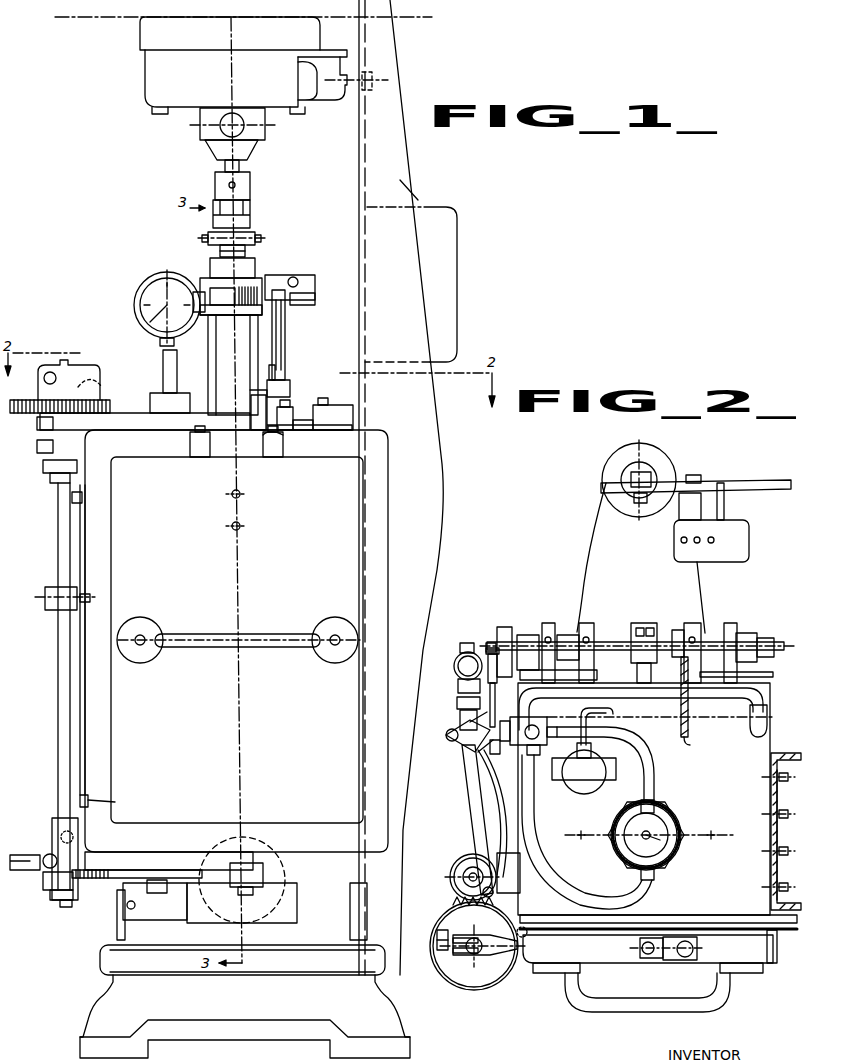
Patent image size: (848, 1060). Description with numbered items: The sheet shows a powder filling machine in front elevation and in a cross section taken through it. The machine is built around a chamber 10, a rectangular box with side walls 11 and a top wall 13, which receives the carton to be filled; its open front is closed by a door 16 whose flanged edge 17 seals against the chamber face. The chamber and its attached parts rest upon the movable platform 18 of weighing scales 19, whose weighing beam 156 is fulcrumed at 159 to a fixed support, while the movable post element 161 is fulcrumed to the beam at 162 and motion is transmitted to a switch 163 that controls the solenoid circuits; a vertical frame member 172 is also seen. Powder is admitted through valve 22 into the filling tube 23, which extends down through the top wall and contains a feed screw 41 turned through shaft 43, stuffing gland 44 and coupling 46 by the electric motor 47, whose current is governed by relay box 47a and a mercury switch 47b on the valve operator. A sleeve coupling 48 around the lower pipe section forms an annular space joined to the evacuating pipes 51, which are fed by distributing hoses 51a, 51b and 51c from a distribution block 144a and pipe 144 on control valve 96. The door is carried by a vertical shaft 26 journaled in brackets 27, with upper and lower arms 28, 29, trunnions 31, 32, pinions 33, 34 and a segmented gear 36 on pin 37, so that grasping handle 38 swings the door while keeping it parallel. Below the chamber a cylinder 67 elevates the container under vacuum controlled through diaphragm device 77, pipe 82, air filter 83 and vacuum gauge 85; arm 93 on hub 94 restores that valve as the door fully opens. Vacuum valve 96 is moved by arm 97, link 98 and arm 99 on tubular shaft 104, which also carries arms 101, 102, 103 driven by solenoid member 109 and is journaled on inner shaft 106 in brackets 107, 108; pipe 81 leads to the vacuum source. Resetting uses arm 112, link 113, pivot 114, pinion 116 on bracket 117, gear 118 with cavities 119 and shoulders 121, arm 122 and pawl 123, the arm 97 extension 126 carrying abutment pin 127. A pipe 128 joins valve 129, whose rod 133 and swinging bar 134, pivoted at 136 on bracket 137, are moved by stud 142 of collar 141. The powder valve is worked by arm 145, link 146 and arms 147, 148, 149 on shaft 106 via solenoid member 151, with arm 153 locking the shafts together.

In FIG. 2, the chamber 10 is at (775, 755).
In FIG. 1, the side walls 11 is at (117, 925).
In FIG. 2, the top wall 13 is at (778, 846).
In FIG. 1, the door 16 is at (352, 538).
In FIG. 2, the door 16 is at (767, 958).
In FIG. 1, the flanged edge 17 is at (378, 553).
In FIG. 2, the flanged edge 17 is at (781, 933).
In FIG. 1, the movable platform 18 is at (110, 955).
In FIG. 1, the weighing scales 19 is at (95, 1000).
In FIG. 2, the weighing scales 19 is at (596, 508).
In FIG. 1, the valve 22 is at (256, 272).
In FIG. 1, the powder filling tube 23 is at (208, 345).
In FIG. 2, the powder filling tube 23 is at (665, 815).
In FIG. 1, the vertical shaft 26 is at (58, 633).
In FIG. 2, the vertical shaft 26 is at (455, 962).
In FIG. 1, the brackets 27 is at (43, 465).
In FIG. 1, the upper arm 28 is at (122, 413).
In FIG. 2, the upper arm 28 is at (587, 953).
In FIG. 1, the lower arm 29 is at (132, 852).
In FIG. 1, the trunnion 31 is at (228, 432).
In FIG. 2, the trunnion 31 is at (653, 958).
In FIG. 1, the trunnion 32 is at (238, 860).
In FIG. 1, the pinion 33 is at (55, 885).
In FIG. 1, the pinion 34 is at (232, 880).
In FIG. 1, the segmented gear 36 is at (176, 870).
In FIG. 1, the pin 37 is at (160, 912).
In FIG. 1, the handle 38 is at (285, 636).
In FIG. 2, the handle 38 is at (617, 1013).
In FIG. 2, the feed screw 41 is at (668, 846).
In FIG. 1, the shaft 43 is at (220, 251).
In FIG. 1, the stuffing gland 44 is at (255, 243).
In FIG. 1, the coupling 46 is at (250, 183).
In FIG. 1, the electric motor 47 is at (145, 72).
In FIG. 1, the relay or switch box 47a is at (457, 292).
In FIG. 1, the mercury switch 47b is at (298, 278).
In FIG. 1, the sleeve coupling 48 is at (277, 400).
In FIG. 2, the sleeve coupling 48 is at (680, 828).
In FIG. 2, the evacuating pipes 51 is at (656, 800).
In FIG. 2, the distributing hose 51a is at (598, 885).
In FIG. 2, the distributing hose 51b is at (647, 758).
In FIG. 2, the distributing hose 51c is at (647, 700).
In FIG. 1, the cylinder 67 is at (297, 918).
In FIG. 1, the vacuum operated device 77 is at (285, 878).
In FIG. 2, the pipe 81 is at (446, 743).
In FIG. 2, the pipe 82 is at (598, 700).
In FIG. 1, the air filter 83 is at (180, 394).
In FIG. 2, the air filter 83 is at (575, 786).
In FIG. 1, the vacuum gauge 85 is at (152, 281).
In FIG. 2, the vacuum gauge 85 is at (600, 786).
In FIG. 1, the arm 93 is at (35, 853).
In FIG. 1, the hub 94 is at (53, 818).
In FIG. 2, the control valve 96 is at (477, 746).
In FIG. 2, the arm 97 is at (495, 756).
In FIG. 2, the link 98 is at (461, 660).
In FIG. 2, the arm 99 is at (506, 627).
In FIG. 2, the arm 101 is at (548, 623).
In FIG. 2, the arm 102 is at (588, 623).
In FIG. 2, the arm 103 is at (638, 623).
In FIG. 2, the tubular shaft 104 is at (604, 642).
In FIG. 1, the inner shaft 106 is at (312, 432).
In FIG. 2, the inner shaft 106 is at (760, 637).
In FIG. 2, the journal bracket 107 is at (527, 635).
In FIG. 1, the journal bracket 108 is at (353, 415).
In FIG. 2, the journal bracket 108 is at (737, 630).
In FIG. 2, the operating member 109 is at (569, 635).
In FIG. 2, the arm 112 is at (464, 746).
In FIG. 2, the link 113 is at (472, 820).
In FIG. 2, the pivotal connection 114 is at (462, 882).
In FIG. 2, the pinion 116 is at (458, 862).
In FIG. 2, the bracket 117 is at (507, 867).
In FIG. 1, the gear 118 is at (35, 413).
In FIG. 2, the gear 118 is at (468, 957).
In FIG. 2, the cavities 119 is at (446, 925).
In FIG. 2, the shoulders 121 is at (437, 942).
In FIG. 1, the arm 122 is at (80, 369).
In FIG. 2, the arm 122 is at (496, 956).
In FIG. 1, the detent or pawl 123 is at (104, 385).
In FIG. 2, the detent or pawl 123 is at (527, 928).
In FIG. 2, the extension 126 is at (457, 702).
In FIG. 2, the abutment pin 127 is at (460, 720).
In FIG. 2, the pipe 128 is at (458, 685).
In FIG. 2, the valve 129 is at (470, 643).
In FIG. 1, the rod 133 is at (72, 502).
In FIG. 2, the rod 133 is at (488, 840).
In FIG. 1, the swinging bar 134 is at (80, 524).
In FIG. 1, the pivotal connection 136 is at (82, 803).
In FIG. 1, the bracket 137 is at (88, 800).
In FIG. 1, the collar 141 is at (48, 588).
In FIG. 1, the stud 142 is at (84, 597).
In FIG. 2, the pipe 144 is at (500, 746).
In FIG. 2, the distribution block 144a is at (500, 778).
In FIG. 1, the arm 145 is at (283, 350).
In FIG. 1, the operating link 146 is at (286, 335).
In FIG. 2, the operating link 146 is at (687, 740).
In FIG. 1, the arm 147 is at (279, 372).
In FIG. 2, the arm 147 is at (678, 630).
In FIG. 1, the arm 148 is at (279, 445).
In FIG. 2, the arm 148 is at (688, 712).
In FIG. 1, the arm 149 is at (290, 405).
In FIG. 2, the arm 149 is at (700, 628).
In FIG. 2, the operating member 151 is at (785, 670).
In FIG. 2, the arm 153 is at (650, 623).
In FIG. 2, the weighing beam 156 is at (741, 483).
In FIG. 2, the fulcrum 159 is at (697, 480).
In FIG. 2, the movable post element 161 is at (624, 479).
In FIG. 2, the fulcrum 162 is at (632, 472).
In FIG. 2, the switch 163 is at (750, 522).
In FIG. 1, the vertical frame members 172 is at (412, 192).
In FIG. 2, the vertical frame members 172 is at (779, 798).